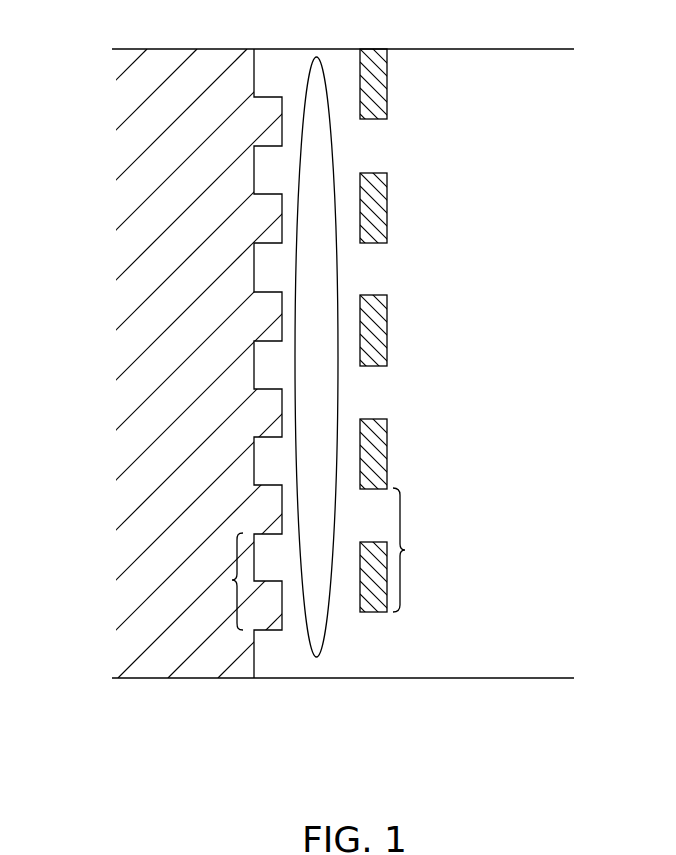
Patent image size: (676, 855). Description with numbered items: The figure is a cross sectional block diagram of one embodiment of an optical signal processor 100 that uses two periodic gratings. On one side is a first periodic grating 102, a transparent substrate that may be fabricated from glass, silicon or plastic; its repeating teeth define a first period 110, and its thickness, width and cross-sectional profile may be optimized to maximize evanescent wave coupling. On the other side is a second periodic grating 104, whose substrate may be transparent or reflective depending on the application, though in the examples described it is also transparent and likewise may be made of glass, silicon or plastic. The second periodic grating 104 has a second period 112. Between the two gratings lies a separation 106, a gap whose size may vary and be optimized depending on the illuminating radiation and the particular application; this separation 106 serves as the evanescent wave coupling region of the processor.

The optical signal processor 100 is at (468, 20).
The first periodic grating 102 is at (158, 137).
The second periodic grating 104 is at (388, 203).
The separation 106 is at (317, 617).
The first period 110 is at (233, 580).
The second period 112 is at (422, 550).